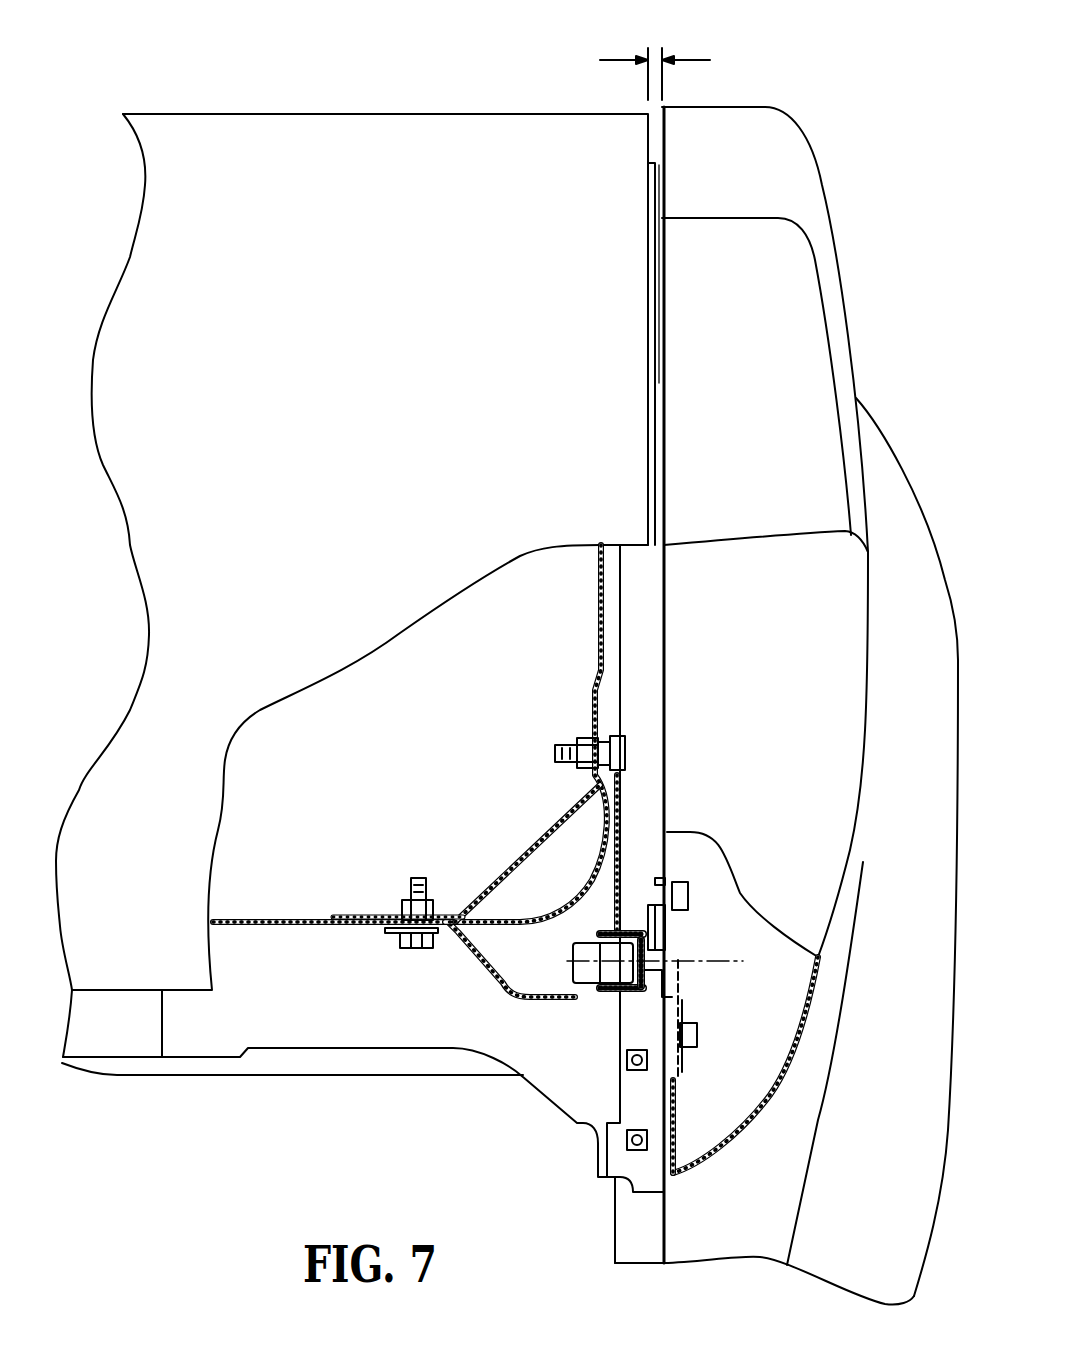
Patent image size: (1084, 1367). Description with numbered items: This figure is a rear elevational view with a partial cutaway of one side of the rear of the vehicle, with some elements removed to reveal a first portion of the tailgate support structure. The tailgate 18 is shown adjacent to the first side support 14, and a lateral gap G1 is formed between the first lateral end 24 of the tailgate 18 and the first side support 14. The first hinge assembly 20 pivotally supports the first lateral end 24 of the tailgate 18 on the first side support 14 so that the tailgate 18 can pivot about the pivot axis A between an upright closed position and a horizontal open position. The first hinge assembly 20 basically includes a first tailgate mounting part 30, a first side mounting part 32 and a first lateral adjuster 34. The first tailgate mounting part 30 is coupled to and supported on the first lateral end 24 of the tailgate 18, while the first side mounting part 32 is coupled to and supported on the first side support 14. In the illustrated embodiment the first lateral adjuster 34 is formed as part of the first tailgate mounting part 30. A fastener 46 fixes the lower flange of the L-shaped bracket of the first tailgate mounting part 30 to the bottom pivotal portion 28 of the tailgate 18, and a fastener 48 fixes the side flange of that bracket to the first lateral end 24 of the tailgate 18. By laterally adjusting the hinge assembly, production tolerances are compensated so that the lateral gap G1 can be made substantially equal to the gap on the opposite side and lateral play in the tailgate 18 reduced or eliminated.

The tailgate 18 is at (298, 150).
The first side support 14 is at (750, 148).
The lateral gap G1 is at (657, 48).
The first lateral end 24 is at (658, 468).
The first tailgate mounting part 30 is at (487, 968).
The fastener 46 is at (418, 877).
The fastener 48 is at (560, 745).
The first lateral adjuster 34 is at (635, 907).
The first hinge assembly 20 is at (607, 1002).
The first side mounting part 32 is at (690, 993).
The pivot axis A is at (735, 955).
The bottom pivotal portion 28 is at (162, 1057).